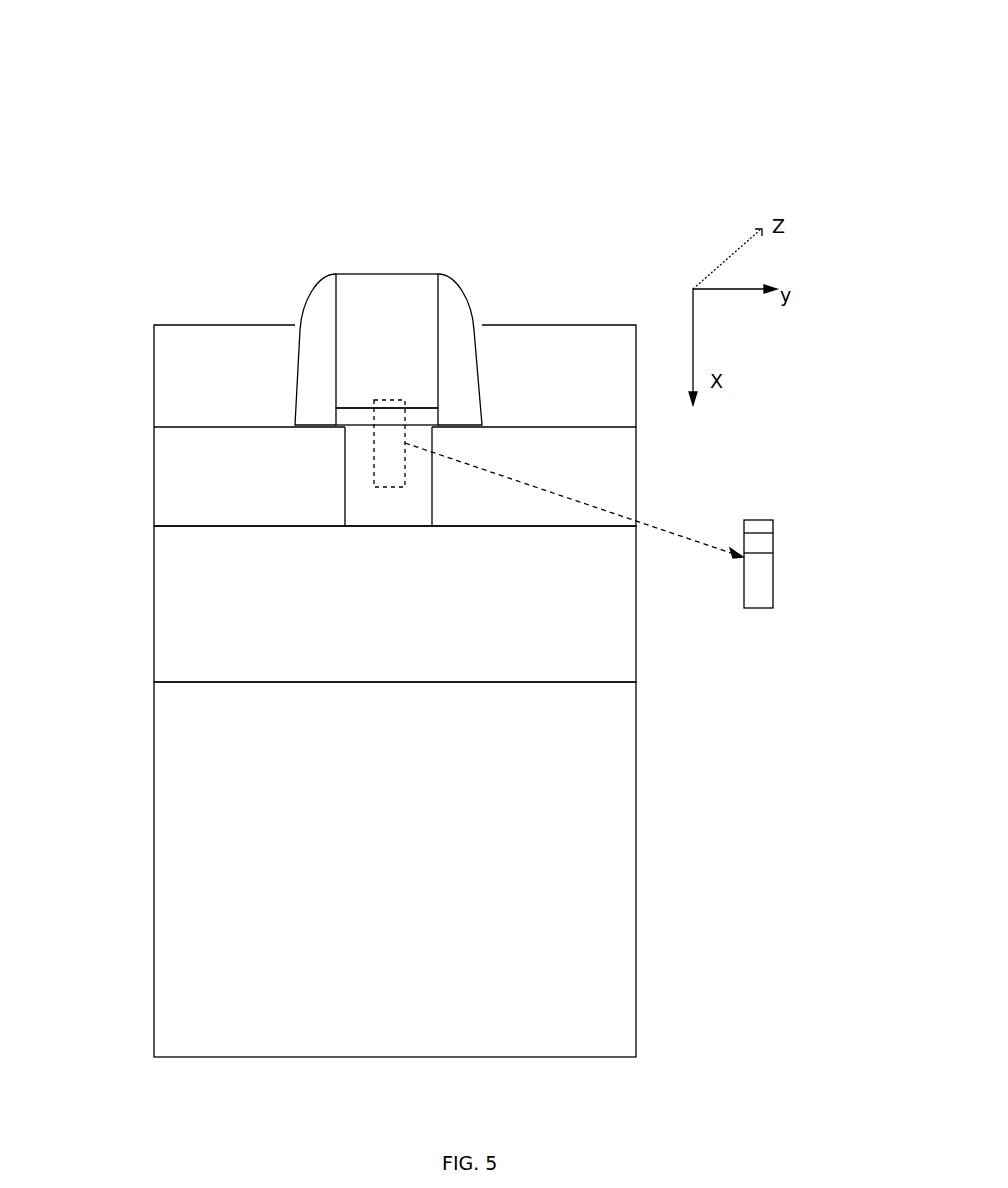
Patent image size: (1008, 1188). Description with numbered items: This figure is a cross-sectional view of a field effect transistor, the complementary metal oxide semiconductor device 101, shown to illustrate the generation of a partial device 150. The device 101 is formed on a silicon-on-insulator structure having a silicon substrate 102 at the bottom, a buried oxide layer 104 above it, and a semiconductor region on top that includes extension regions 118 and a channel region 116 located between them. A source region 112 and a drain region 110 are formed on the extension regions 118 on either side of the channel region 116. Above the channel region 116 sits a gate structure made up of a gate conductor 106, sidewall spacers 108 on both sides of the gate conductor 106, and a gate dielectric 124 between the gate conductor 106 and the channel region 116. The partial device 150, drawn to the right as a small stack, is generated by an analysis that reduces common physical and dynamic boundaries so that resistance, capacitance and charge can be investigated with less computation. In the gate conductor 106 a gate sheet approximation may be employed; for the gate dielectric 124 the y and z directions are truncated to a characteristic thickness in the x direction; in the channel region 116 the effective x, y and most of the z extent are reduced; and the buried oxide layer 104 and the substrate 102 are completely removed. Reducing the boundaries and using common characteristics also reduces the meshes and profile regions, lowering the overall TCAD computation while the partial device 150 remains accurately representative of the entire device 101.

The complementary metal oxide semiconductor device 101 is at (370, 47).
The substrate 102 is at (154, 810).
The buried oxide layer 104 is at (154, 605).
The gate conductor 106 is at (403, 293).
The sidewall spacers 108 is at (323, 310).
The drain region 110 is at (520, 328).
The source region 112 is at (226, 327).
The channel region 116 is at (370, 508).
The extension regions 118 is at (195, 478).
The gate dielectric 124 is at (353, 418).
The partial device 150 is at (763, 494).